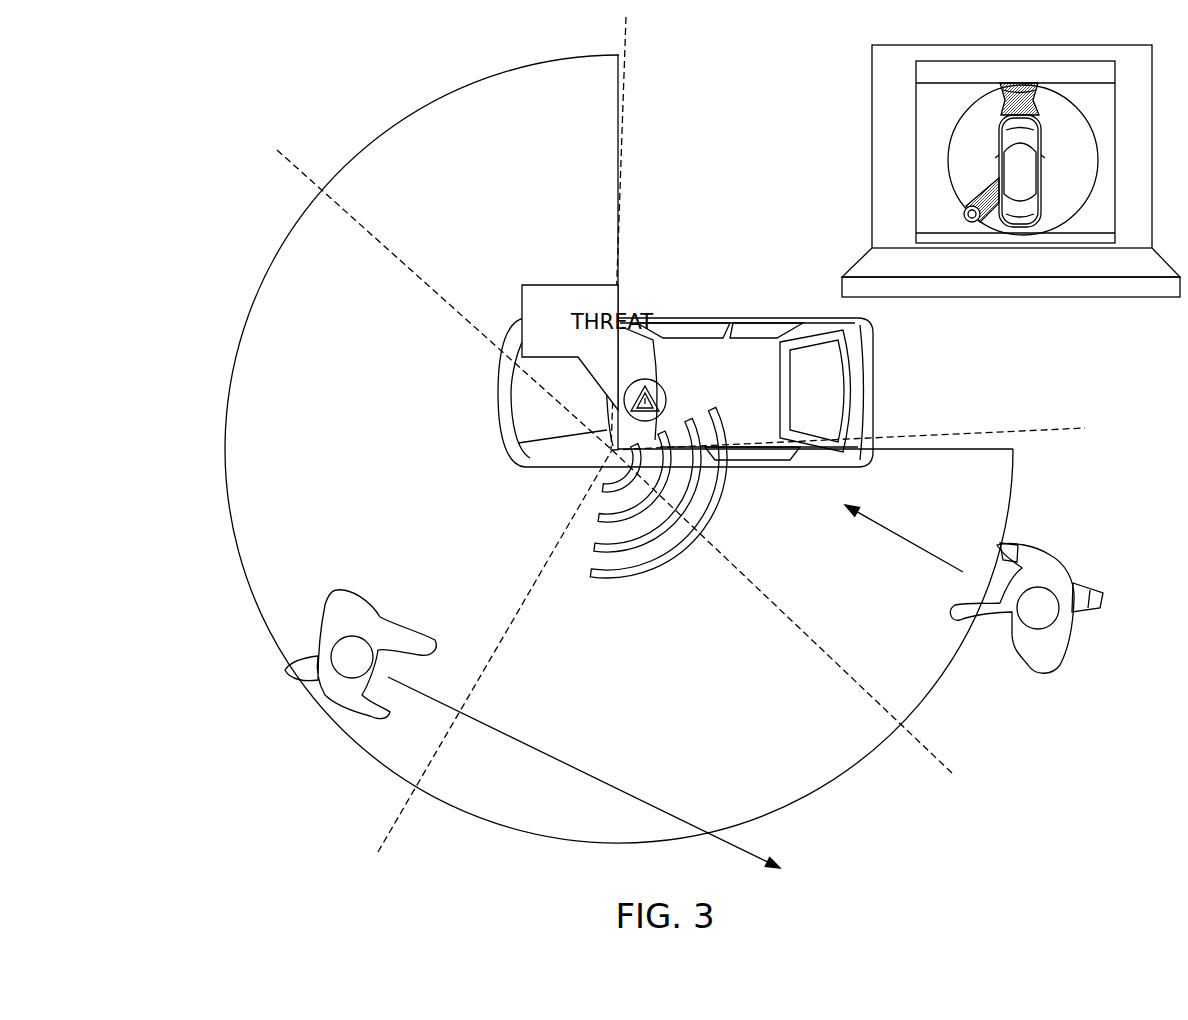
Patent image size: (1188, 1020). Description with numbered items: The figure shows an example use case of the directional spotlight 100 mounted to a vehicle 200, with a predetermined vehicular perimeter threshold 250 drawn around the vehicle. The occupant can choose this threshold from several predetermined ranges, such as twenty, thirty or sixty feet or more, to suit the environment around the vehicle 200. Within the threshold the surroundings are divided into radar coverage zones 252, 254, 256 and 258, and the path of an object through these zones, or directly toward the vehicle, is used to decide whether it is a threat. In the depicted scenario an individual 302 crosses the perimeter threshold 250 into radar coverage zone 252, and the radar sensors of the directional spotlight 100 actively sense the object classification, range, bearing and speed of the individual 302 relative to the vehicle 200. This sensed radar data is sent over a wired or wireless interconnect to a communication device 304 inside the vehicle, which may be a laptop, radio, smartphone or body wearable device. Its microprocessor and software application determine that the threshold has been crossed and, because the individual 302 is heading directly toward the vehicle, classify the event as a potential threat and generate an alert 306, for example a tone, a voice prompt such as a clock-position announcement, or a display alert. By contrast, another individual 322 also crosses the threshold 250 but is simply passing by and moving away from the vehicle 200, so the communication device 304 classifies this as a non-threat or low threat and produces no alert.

The directional spotlight 100 is at (617, 461).
The vehicle 200 is at (906, 337).
The predetermined vehicular perimeter threshold 250 is at (379, 812).
The radar coverage zone 252 is at (1016, 468).
The radar coverage zone 254 is at (838, 780).
The radar coverage zone 256 is at (225, 450).
The radar coverage zone 258 is at (432, 100).
The individual 302 is at (1068, 632).
The communication device 304 is at (872, 160).
The alert 306 is at (667, 394).
The individual 322 is at (350, 725).